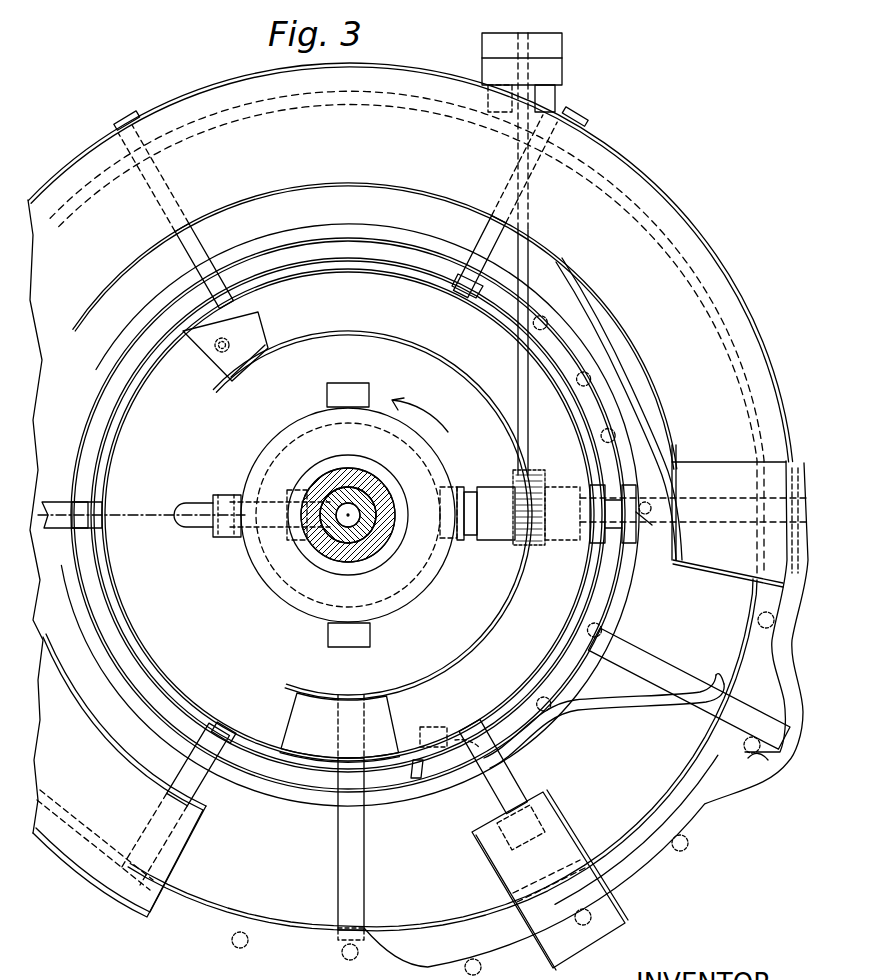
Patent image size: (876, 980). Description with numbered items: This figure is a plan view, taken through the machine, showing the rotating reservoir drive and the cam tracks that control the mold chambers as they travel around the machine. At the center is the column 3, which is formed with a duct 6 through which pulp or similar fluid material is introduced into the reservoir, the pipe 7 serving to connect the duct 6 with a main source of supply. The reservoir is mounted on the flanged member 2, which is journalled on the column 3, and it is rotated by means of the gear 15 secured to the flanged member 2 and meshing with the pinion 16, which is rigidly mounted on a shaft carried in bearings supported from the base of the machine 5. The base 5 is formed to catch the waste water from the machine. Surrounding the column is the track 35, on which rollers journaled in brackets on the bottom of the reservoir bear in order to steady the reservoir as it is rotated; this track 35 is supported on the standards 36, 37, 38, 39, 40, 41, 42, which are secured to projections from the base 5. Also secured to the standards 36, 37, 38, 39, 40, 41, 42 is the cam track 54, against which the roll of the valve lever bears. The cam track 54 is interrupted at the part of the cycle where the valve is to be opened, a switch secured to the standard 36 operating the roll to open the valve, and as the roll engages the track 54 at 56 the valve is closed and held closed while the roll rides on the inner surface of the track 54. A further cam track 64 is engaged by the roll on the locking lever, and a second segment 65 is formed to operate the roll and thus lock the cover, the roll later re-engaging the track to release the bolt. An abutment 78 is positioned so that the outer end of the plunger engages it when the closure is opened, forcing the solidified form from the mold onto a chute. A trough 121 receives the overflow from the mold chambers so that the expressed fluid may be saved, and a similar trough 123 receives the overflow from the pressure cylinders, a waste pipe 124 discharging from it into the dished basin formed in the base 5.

The flanged member 2 is at (376, 546).
The column 3 is at (340, 551).
The base of the machine 5 is at (208, 898).
The duct 6 is at (357, 514).
The pipe 7 is at (193, 526).
The gear 15 is at (272, 585).
The pinion 16 is at (466, 530).
The track 35 is at (151, 672).
The standard 36 is at (659, 520).
The standard 37 is at (492, 241).
The standard 38 is at (194, 243).
The standard 39 is at (52, 508).
The standard 40 is at (352, 828).
The standard 41 is at (520, 786).
The standard 42 is at (650, 666).
The cam track 54 is at (612, 396).
The point of engagement of cam track 56 is at (650, 500).
The cam track 64 is at (708, 772).
The second segment 65 is at (770, 748).
The abutment 78 is at (455, 762).
The trough 121 is at (108, 878).
The trough 123 is at (332, 325).
The waste pipe 124 is at (218, 354).